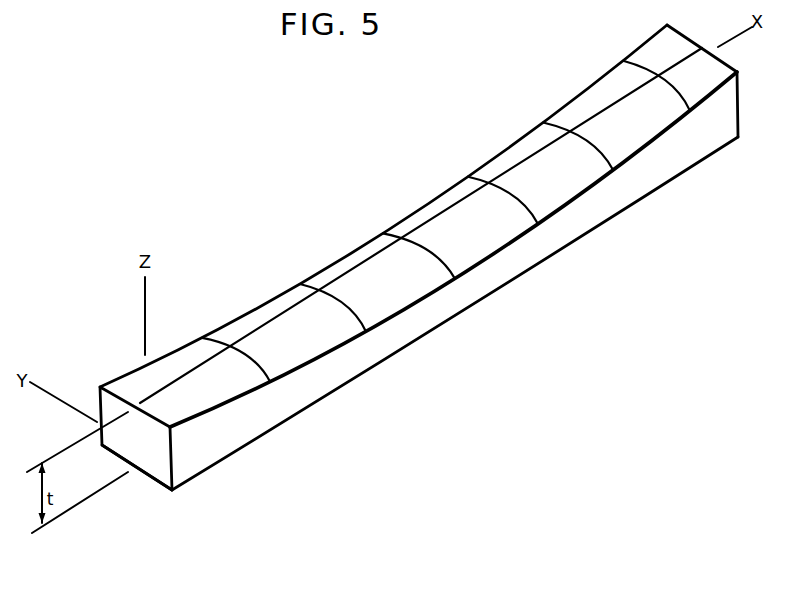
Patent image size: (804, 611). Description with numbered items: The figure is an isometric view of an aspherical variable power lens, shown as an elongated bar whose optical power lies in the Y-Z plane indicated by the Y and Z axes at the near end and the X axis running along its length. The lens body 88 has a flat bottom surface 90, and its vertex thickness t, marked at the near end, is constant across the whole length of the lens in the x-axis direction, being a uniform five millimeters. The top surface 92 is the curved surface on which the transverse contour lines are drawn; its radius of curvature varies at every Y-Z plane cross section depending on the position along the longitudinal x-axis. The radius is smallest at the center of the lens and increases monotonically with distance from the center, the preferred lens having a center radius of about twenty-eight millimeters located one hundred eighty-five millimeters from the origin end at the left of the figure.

The elongated bar (beam) with contoured top surface 88 is at (594, 232).
The bottom surface 90 is at (157, 481).
The top surface 92 is at (540, 120).